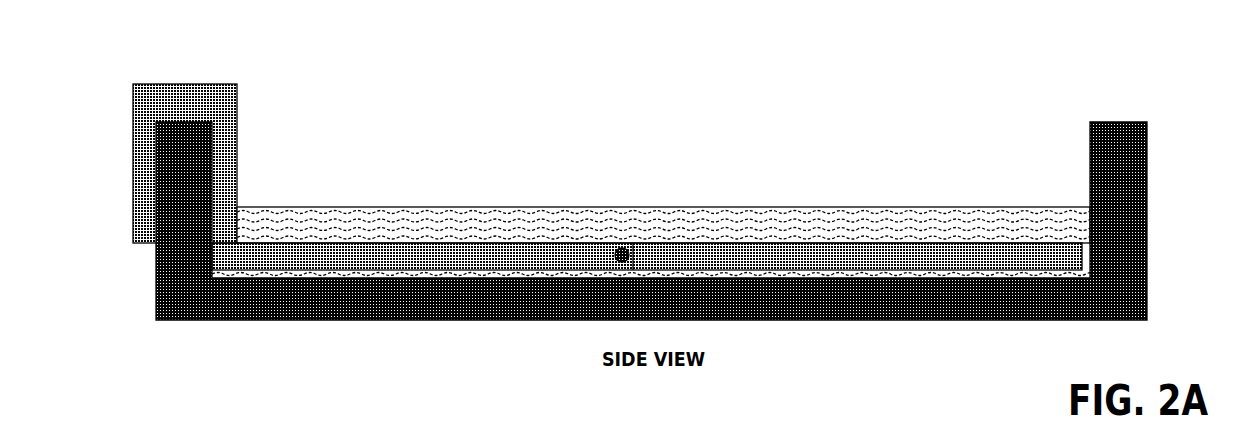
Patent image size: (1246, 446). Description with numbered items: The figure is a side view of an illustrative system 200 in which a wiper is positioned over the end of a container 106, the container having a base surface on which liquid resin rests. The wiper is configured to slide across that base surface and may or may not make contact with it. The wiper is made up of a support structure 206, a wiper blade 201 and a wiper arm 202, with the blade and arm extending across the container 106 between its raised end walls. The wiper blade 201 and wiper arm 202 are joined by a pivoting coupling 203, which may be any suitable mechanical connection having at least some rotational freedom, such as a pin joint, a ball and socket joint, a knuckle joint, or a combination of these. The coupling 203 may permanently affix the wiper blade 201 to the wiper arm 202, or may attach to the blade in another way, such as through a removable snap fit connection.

The system 200 is at (126, 32).
The container 106 is at (182, 298).
The wiper blade 201 is at (840, 256).
The wiper arm 202 is at (428, 256).
The pivoting coupling 203 is at (618, 248).
The support structure 206 is at (208, 118).